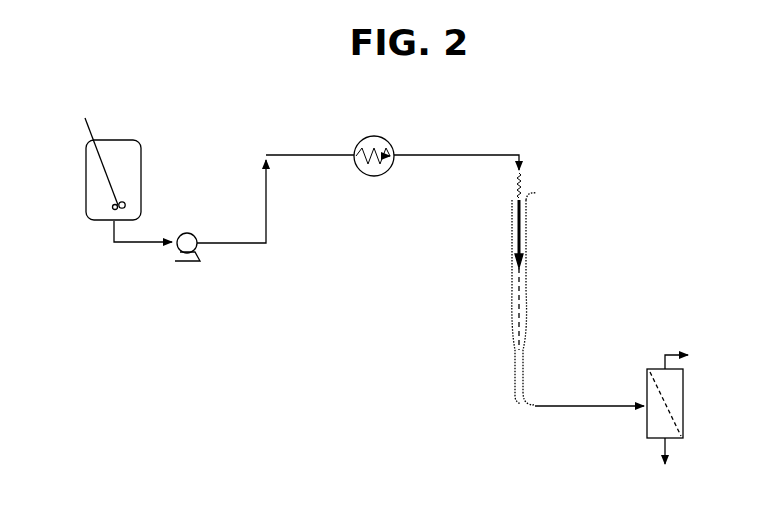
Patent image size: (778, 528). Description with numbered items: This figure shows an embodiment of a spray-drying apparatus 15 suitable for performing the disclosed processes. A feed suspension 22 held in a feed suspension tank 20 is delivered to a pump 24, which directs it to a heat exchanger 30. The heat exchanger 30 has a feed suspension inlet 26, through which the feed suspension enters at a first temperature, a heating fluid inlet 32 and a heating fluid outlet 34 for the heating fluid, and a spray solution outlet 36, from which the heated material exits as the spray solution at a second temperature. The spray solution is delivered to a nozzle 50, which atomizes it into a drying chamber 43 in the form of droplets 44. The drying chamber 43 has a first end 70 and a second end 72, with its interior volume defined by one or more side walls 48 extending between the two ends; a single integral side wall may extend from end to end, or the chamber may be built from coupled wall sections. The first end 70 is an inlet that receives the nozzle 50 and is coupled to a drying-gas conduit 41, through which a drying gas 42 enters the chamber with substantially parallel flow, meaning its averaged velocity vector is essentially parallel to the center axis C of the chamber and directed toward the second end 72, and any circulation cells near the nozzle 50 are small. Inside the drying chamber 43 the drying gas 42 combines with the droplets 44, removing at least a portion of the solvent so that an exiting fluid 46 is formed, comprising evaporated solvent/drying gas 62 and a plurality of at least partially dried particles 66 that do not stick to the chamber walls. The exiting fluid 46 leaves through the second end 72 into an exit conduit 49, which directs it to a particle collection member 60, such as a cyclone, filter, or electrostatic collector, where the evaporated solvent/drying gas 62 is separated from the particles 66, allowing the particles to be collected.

The spray-drying apparatus 15 is at (660, 177).
The feed suspension tank 20 is at (86, 193).
The stirrer/sensor 22 is at (125, 204).
The pump 24 is at (184, 262).
The feed suspension inlet 26 is at (275, 189).
The heat exchanger 30 is at (368, 176).
The heating fluid inlet 32 is at (387, 134).
The heating fluid outlet 34 is at (361, 137).
The spray solution outlet 36 is at (456, 151).
The drying-gas conduit 41 is at (524, 192).
The drying gas 42 is at (541, 195).
The drying chamber 43 is at (529, 287).
The droplets 44 is at (516, 258).
The side walls 48 is at (522, 263).
The nozzle 50 is at (518, 232).
The first end 70 is at (521, 230).
The center axis C is at (518, 312).
The second end 72 is at (515, 396).
The exit conduit 49 is at (526, 408).
The exiting fluid 46 is at (589, 394).
The particle collection member 60 is at (685, 408).
The evaporated solvent/drying gas 62 is at (692, 354).
The partially dried particles 66 is at (665, 467).